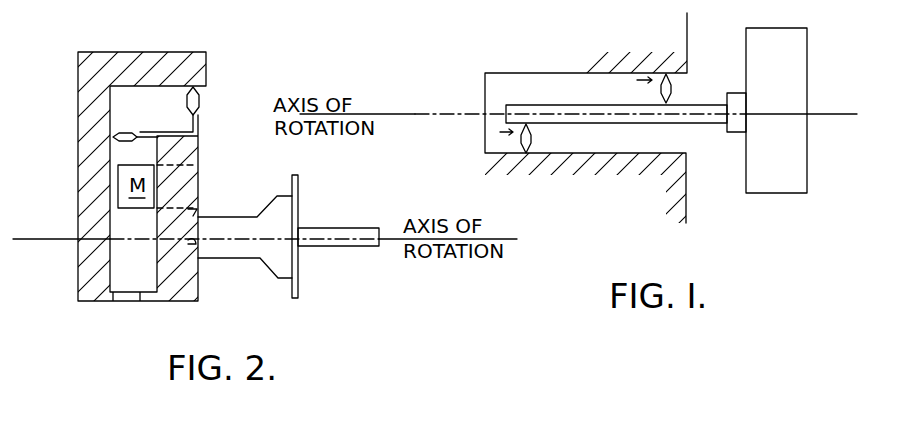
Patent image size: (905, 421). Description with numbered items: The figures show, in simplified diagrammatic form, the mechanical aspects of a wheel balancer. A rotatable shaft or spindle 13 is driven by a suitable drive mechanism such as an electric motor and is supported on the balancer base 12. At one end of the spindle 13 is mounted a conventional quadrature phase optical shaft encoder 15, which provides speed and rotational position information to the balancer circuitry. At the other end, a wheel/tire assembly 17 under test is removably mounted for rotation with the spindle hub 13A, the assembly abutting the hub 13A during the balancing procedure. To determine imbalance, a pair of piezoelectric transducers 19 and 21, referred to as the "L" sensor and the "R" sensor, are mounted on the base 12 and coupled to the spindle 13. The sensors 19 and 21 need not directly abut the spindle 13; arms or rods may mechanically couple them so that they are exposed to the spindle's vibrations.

In FIG. 2, the balancer base 12 is at (120, 303).
In FIG. 1, the balancer base 12 is at (628, 38).
In FIG. 2, the spindle 13 is at (350, 228).
In FIG. 1, the spindle 13 is at (702, 125).
In FIG. 2, the spindle hub 13A is at (300, 267).
In FIG. 2, the optical shaft encoder 15 is at (196, 218).
In FIG. 1, the optical shaft encoder 15 is at (731, 93).
In FIG. 1, the wheel/tire assembly 17 is at (808, 163).
In FIG. 2, the piezoelectric transducer 19 is at (127, 131).
In FIG. 1, the piezoelectric transducer 19 is at (532, 138).
In FIG. 2, the piezoelectric transducer 21 is at (201, 100).
In FIG. 1, the piezoelectric transducer 21 is at (672, 88).